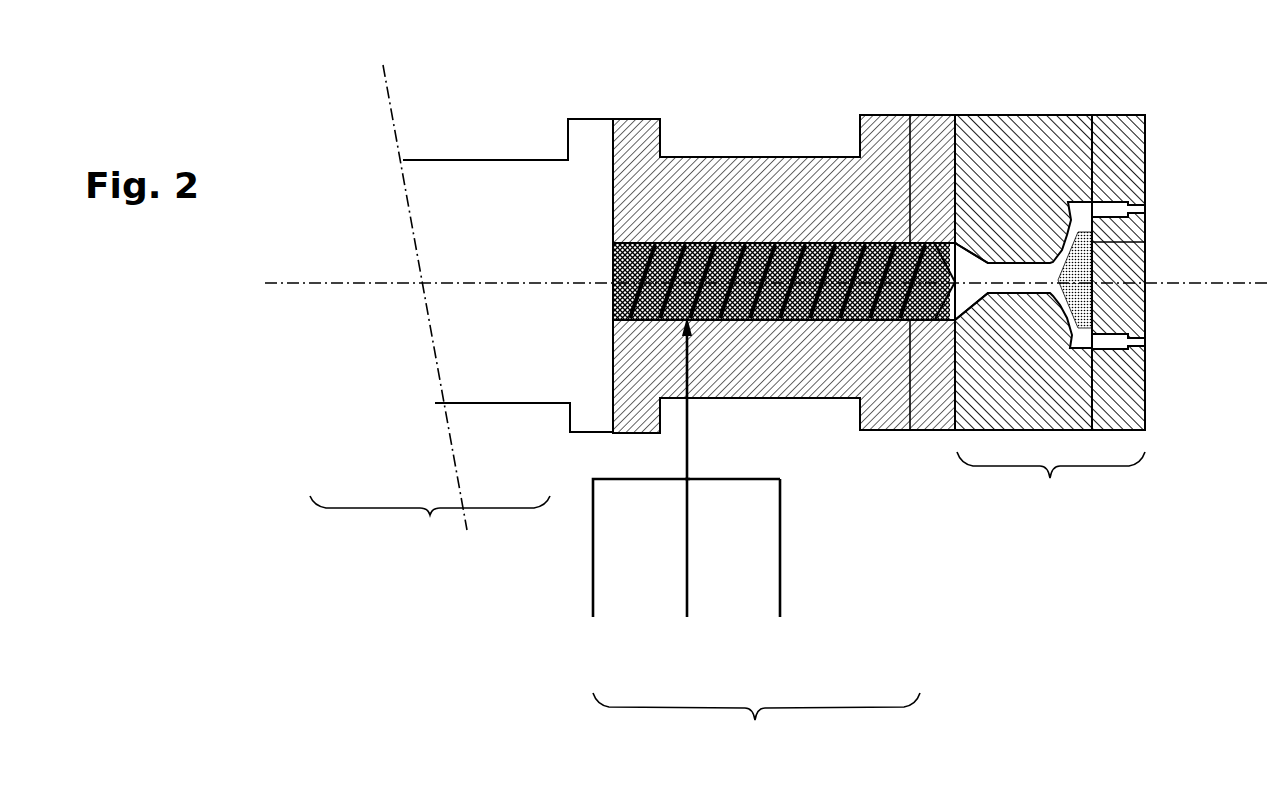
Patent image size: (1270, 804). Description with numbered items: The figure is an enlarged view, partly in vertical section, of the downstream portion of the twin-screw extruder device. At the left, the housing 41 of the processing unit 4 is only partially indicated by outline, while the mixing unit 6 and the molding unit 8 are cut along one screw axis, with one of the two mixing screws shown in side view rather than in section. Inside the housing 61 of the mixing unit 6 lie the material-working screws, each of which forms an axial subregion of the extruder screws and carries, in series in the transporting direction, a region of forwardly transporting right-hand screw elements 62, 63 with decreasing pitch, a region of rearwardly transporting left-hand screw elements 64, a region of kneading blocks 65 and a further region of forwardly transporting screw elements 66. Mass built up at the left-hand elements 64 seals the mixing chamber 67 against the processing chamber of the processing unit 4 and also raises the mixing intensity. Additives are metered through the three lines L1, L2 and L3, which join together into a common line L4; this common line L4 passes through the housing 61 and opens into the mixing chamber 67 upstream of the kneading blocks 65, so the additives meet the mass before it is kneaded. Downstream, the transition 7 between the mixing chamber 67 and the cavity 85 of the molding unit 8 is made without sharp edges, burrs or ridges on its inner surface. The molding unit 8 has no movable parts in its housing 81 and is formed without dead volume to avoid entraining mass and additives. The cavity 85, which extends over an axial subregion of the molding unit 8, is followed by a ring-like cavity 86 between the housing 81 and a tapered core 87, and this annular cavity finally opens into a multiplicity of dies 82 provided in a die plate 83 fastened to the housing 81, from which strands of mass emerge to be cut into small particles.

The processing unit 4 is at (430, 324).
The housing 41 is at (506, 186).
The mixing unit 6 is at (774, 447).
The housing 61 is at (785, 165).
The forwardly transporting screw elements 62 is at (613, 307).
The forwardly transporting screw elements 63 is at (699, 248).
The rearwardly transporting screw elements 64 is at (750, 245).
The kneading blocks 65 is at (793, 318).
The forwardly transporting screw elements 66 is at (893, 243).
The mixing chamber 67 is at (634, 245).
The transition 7 is at (927, 428).
The molding unit 8 is at (1051, 495).
The housing 81 is at (1043, 118).
The dies 82 is at (1108, 206).
The die plate 83 is at (1118, 136).
The cavity 85 is at (1012, 268).
The ring-like cavity 86 is at (1147, 279).
The tapered core 87 is at (1147, 252).
The line L1 is at (597, 553).
The line L2 is at (693, 553).
The line L3 is at (783, 547).
The common line L4 is at (693, 437).